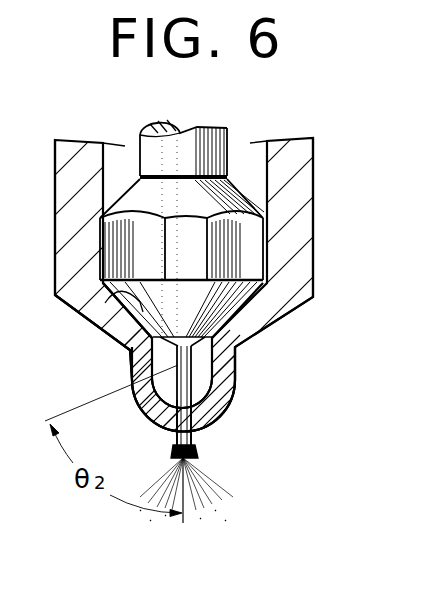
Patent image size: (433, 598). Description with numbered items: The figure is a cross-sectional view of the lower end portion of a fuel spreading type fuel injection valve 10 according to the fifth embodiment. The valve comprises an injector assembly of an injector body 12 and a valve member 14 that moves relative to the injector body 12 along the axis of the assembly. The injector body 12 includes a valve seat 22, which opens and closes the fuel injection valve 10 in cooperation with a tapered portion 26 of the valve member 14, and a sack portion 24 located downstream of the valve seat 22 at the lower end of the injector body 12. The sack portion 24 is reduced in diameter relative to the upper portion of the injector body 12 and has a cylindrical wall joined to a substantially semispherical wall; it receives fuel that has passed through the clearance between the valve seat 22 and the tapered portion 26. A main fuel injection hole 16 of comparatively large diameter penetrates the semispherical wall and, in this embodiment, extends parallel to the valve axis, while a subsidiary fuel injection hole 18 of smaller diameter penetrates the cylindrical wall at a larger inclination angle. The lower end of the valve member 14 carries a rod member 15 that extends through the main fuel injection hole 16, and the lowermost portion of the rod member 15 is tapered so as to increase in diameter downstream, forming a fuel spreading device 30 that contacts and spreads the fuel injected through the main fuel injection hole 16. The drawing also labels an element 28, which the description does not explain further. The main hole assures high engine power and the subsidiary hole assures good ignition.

The fuel injection valve 10 is at (313, 182).
The injector body 12 is at (303, 215).
The valve member 14 is at (222, 138).
The rod member 15 is at (144, 409).
The main fuel injection hole 16 is at (200, 423).
The subsidiary fuel injection hole 18 is at (138, 377).
The valve seat 22 is at (85, 319).
The sack portion 24 is at (220, 375).
The tapered portion 26 is at (220, 291).
The hex nut 28 is at (253, 258).
The fuel spreading device 30 is at (197, 449).